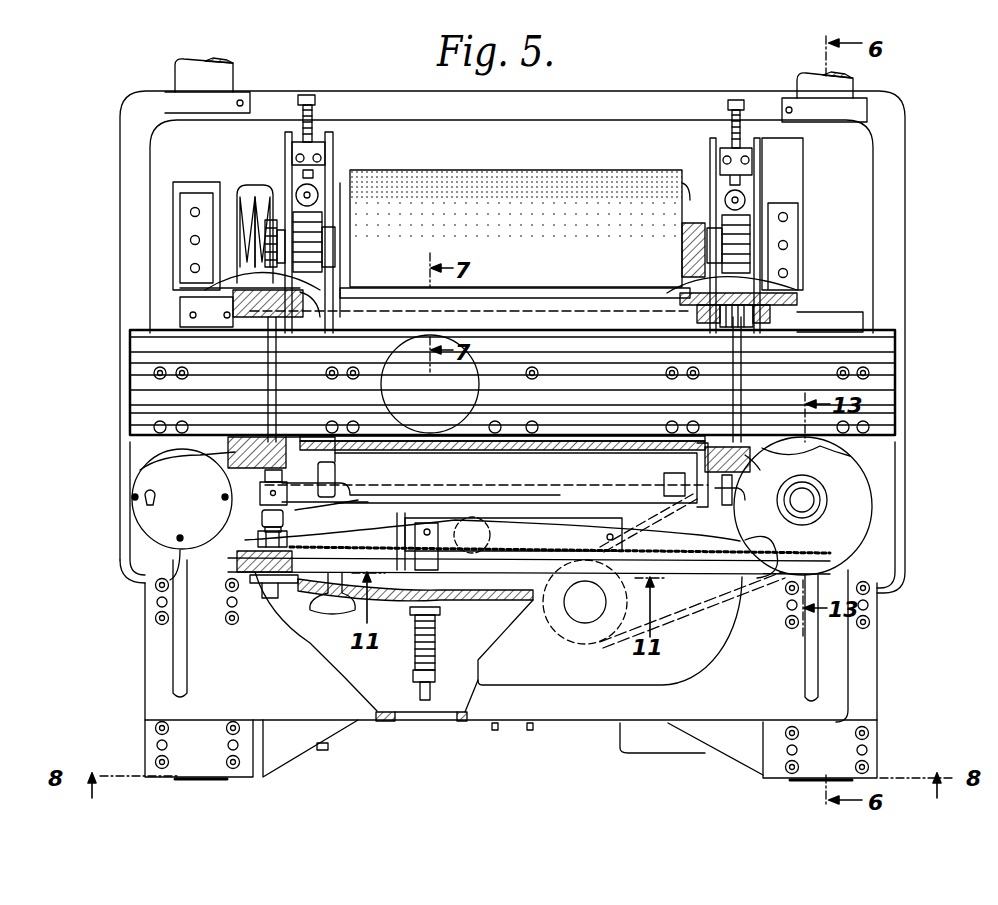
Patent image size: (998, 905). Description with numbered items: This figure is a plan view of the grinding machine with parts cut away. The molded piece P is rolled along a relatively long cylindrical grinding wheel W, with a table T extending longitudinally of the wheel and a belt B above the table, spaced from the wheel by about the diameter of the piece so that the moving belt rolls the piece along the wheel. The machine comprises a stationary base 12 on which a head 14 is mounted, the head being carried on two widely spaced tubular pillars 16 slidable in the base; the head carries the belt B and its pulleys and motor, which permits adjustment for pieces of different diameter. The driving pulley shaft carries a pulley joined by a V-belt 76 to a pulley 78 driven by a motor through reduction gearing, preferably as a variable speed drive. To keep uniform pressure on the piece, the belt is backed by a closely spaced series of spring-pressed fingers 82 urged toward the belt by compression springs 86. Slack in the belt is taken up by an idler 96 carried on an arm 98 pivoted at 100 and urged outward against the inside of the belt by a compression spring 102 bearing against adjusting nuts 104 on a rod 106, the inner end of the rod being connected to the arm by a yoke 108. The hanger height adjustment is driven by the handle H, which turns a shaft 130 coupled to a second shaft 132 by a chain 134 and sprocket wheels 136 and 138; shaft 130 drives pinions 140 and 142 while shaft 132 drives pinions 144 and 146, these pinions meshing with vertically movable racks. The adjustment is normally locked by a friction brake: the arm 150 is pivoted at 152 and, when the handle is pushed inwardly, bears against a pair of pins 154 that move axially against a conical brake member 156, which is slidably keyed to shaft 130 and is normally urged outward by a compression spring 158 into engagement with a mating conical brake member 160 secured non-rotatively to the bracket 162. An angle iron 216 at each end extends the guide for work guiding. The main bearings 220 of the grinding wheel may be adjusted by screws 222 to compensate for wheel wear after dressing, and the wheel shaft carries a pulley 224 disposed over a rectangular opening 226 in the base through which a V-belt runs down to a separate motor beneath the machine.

The stationary base 12 is at (905, 203).
The head 14 is at (877, 660).
The tubular pillars 16 is at (233, 75).
The V-belt 76 is at (761, 588).
The pulley 78 is at (853, 462).
The spring-pressed fingers 82 is at (360, 446).
The compression springs 86 is at (421, 504).
The idler 96 is at (492, 535).
The arm 98 is at (540, 545).
The pivot 100 is at (614, 537).
The compression spring 102 is at (437, 643).
The adjusting nuts 104 is at (430, 682).
The rod 106 is at (415, 588).
The yoke 108 is at (470, 580).
The shaft 130 is at (278, 346).
The shaft 132 is at (743, 346).
The chain 134 is at (486, 475).
The sprocket wheel 136 is at (259, 496).
The sprocket wheel 138 is at (741, 497).
The pinion 140 is at (183, 499).
The pinion 142 is at (260, 325).
The pinion 144 is at (761, 466).
The pinion 146 is at (770, 308).
The arm 150 is at (325, 592).
The pivot 152 is at (250, 585).
The pins 154 is at (265, 600).
The conical brake member 156 is at (258, 535).
The compression spring 158 is at (297, 513).
The mating conical brake member 160 is at (284, 548).
The bracket 162 is at (245, 565).
The angle iron 216 is at (845, 313).
The main bearings 220 is at (317, 212).
The screws 222 is at (316, 105).
The pulley 224 is at (251, 197).
The rectangular opening 226 is at (238, 186).
The grinding wheel W is at (578, 170).
The table T is at (897, 378).
The molded piece P is at (442, 384).
The belt B is at (356, 549).
The handle H is at (336, 611).